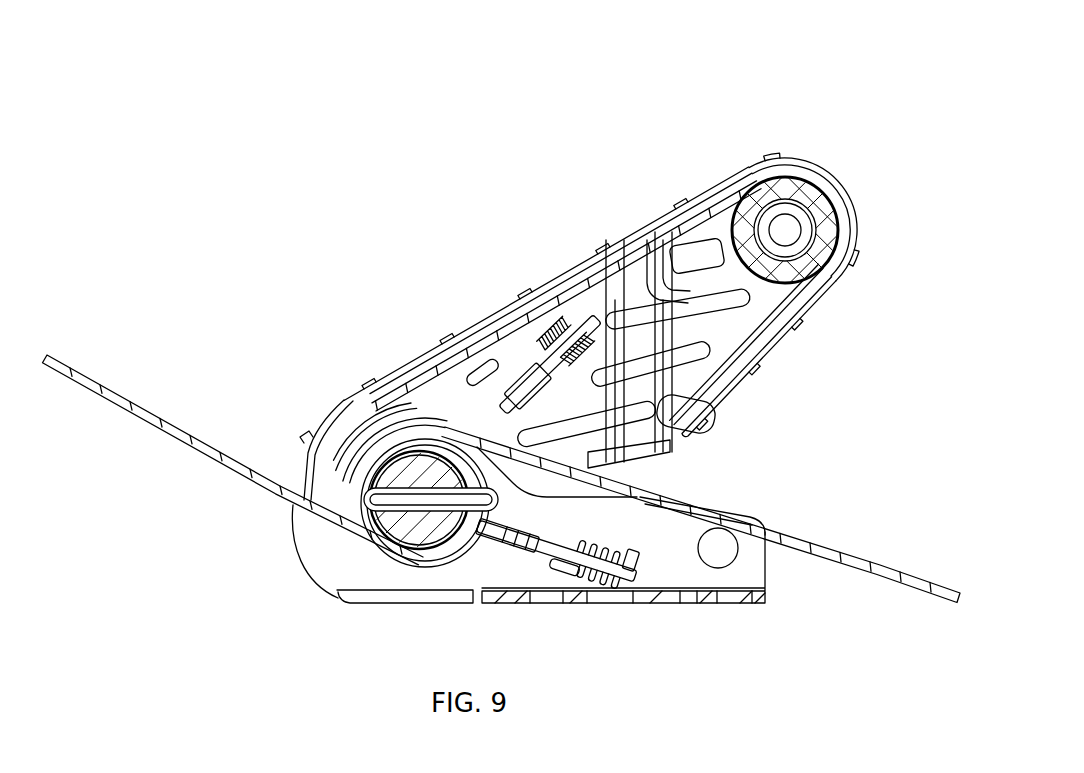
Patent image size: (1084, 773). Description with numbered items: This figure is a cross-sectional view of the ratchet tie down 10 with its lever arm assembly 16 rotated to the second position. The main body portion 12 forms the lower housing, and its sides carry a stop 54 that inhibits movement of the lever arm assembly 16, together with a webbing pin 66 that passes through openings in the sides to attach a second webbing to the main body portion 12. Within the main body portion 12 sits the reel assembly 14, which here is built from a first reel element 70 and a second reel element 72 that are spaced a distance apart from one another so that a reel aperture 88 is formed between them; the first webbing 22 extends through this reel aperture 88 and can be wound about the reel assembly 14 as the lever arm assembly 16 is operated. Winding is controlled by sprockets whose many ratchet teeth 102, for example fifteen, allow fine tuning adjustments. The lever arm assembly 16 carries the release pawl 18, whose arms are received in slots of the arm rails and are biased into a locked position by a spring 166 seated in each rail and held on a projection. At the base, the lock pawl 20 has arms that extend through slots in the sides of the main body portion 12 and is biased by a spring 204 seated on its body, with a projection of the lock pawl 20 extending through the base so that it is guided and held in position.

The ratchet tie down 10 is at (502, 333).
The main body portion 12 is at (533, 582).
The reel assembly 14 is at (367, 502).
The lever arm assembly 16 is at (565, 376).
The release pawl 18 is at (608, 303).
The lock pawl 20 is at (582, 562).
The first webbing 22 is at (188, 447).
The stop 54 is at (306, 470).
The webbing pin 66 is at (723, 562).
The first reel element 70 is at (400, 468).
The second reel element 72 is at (424, 537).
The reel aperture 88 is at (378, 520).
The ratchet teeth 102 is at (417, 405).
The spring 166 is at (553, 333).
The spring 204 is at (603, 583).